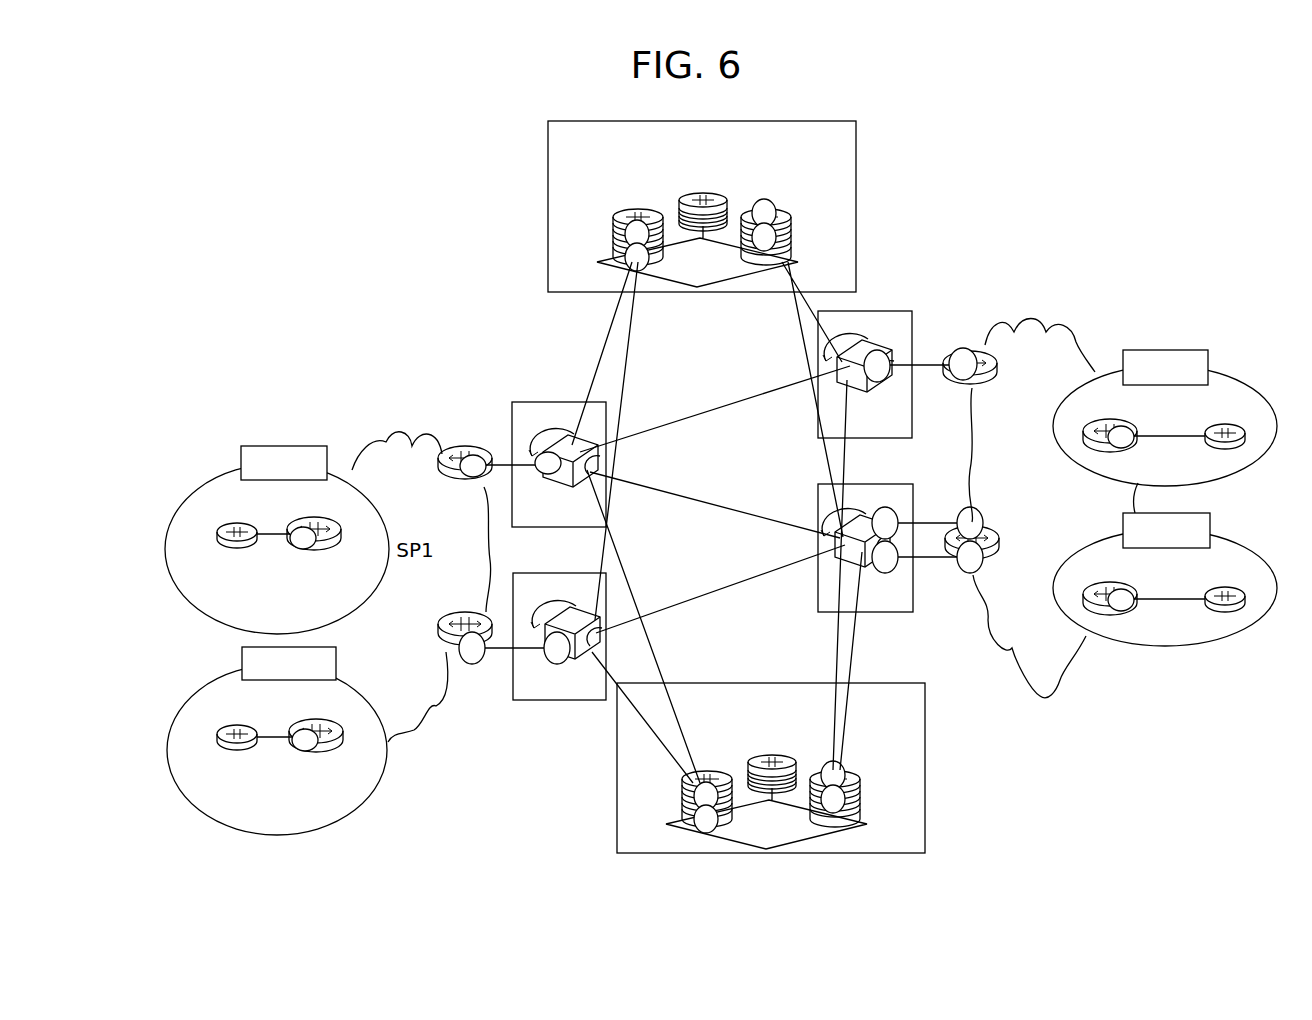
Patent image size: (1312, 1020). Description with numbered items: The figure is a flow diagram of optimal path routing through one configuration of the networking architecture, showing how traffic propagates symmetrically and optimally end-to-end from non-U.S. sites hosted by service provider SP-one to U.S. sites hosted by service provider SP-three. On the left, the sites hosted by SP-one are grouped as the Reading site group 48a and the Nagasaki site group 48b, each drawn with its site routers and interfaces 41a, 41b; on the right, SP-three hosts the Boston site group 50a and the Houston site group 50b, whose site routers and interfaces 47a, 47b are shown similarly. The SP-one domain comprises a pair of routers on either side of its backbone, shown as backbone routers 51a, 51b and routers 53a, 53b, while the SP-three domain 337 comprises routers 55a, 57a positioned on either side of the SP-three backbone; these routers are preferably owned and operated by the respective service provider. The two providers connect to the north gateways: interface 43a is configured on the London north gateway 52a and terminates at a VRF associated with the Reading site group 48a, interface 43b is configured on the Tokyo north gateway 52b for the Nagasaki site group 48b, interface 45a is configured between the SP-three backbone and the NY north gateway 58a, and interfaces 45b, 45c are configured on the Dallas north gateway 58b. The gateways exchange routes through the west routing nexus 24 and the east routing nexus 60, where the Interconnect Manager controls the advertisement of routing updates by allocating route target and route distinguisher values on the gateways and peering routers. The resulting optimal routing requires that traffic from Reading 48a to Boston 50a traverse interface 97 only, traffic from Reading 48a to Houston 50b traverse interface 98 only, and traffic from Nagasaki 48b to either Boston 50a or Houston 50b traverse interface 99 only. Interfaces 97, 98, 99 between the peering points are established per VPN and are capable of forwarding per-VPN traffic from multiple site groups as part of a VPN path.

The west routing nexus 24 is at (866, 160).
The east routing nexus 60 is at (928, 827).
The Reading customer edge routers 41a is at (272, 536).
The Nagasaki customer edge routers 41b is at (272, 738).
The interface 43a is at (504, 452).
The interface 43b is at (497, 664).
The interface 45a is at (932, 358).
The interface 45b is at (936, 506).
The interface 45c is at (937, 575).
The Boston customer routers 47a is at (1172, 437).
The Houston customer routers 47b is at (1172, 600).
The Reading site group 48a is at (283, 444).
The Nagasaki site group 48b is at (230, 830).
The Boston site group 50a is at (1167, 347).
The Houston site group 50b is at (1172, 650).
The backbone router 51a is at (333, 522).
The backbone router 51b is at (410, 440).
The London north gateway 52a is at (553, 420).
The Tokyo north gateway 52b is at (569, 662).
The VRF link 53a is at (338, 752).
The link 53b is at (470, 666).
The VRF 55a is at (1103, 422).
The VRF 57a is at (1125, 612).
The NY north gateway 58a is at (878, 335).
The Dallas north gateway 58b is at (878, 570).
The interface 97 is at (746, 396).
The interface 98 is at (733, 500).
The interface 99 is at (746, 574).
The SP3 service provider network 337 is at (1074, 706).